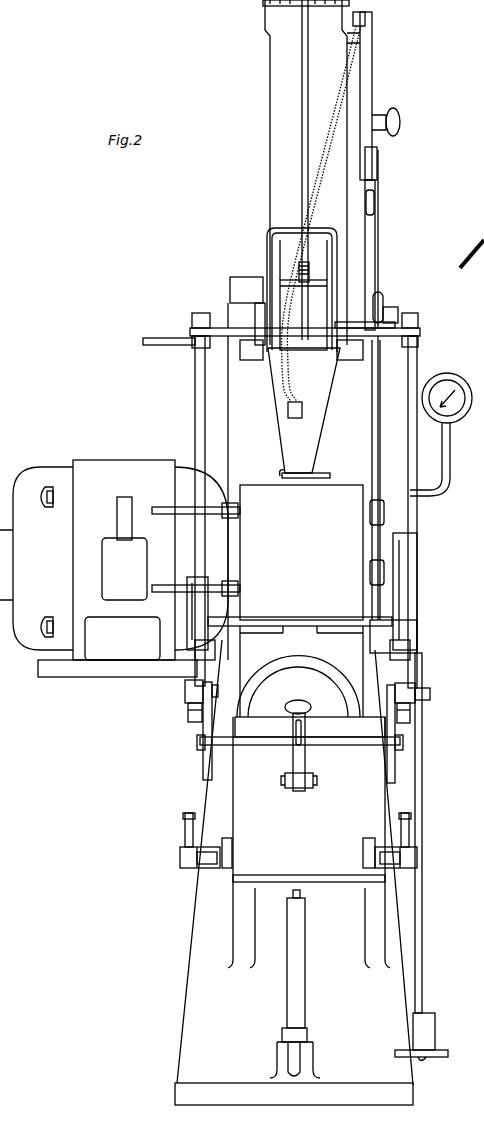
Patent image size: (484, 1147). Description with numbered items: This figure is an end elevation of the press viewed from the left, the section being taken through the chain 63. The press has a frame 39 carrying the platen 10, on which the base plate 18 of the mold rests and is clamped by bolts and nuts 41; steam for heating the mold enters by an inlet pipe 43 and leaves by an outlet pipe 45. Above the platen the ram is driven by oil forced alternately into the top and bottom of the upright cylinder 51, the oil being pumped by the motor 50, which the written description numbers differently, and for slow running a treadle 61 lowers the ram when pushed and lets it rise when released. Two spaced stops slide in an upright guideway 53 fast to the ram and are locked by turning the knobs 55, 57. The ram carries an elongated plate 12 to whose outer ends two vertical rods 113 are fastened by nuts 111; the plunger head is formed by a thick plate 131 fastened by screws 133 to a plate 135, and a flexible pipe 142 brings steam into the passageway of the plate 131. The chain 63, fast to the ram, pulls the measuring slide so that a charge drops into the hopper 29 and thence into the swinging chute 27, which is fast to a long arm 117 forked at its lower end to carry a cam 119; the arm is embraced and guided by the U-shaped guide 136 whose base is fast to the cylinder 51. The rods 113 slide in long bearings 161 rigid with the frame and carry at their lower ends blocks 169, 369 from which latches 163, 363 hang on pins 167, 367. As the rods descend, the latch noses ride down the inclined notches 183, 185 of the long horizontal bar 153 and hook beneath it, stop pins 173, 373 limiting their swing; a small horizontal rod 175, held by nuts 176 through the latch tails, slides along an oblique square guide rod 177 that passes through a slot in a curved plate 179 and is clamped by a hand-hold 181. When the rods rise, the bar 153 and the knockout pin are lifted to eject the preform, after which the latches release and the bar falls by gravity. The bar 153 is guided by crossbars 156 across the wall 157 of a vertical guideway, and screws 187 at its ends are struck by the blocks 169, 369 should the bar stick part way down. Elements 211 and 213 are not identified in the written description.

The platen 10 is at (400, 645).
The plate 12 is at (222, 326).
The base plate 18 is at (300, 628).
The swinging chute 27 is at (320, 397).
The hopper 29 is at (318, 296).
The frame 39 is at (200, 982).
The bolts and nuts 41 is at (210, 580).
The inlet pipe 43 is at (166, 506).
The outlet pipe 45 is at (166, 586).
The motor 50 is at (62, 478).
The upright cylinder 51 is at (268, 70).
The upright guideway 53 is at (372, 78).
The knob 55 is at (400, 122).
The knob 57 is at (390, 312).
The treadle 61 is at (430, 1060).
The chain 63 is at (298, 264).
The nuts 111 is at (192, 320).
The vertical rods 113 is at (195, 386).
The long arm 117 is at (305, 35).
The cam 119 is at (316, 245).
The thick plate 131 is at (345, 360).
The screws 133 is at (255, 360).
The plate 135 is at (365, 345).
The U-shaped guide member 136 is at (265, 290).
The flexible pipe 142 is at (150, 340).
The long horizontal bar 153 is at (180, 858).
The crossbars 156 is at (228, 868).
The wall 157 is at (360, 810).
The long bearings 161 is at (196, 617).
The latch 163 is at (203, 728).
The pin 167 is at (218, 690).
The small block 169 is at (190, 692).
The stop pin 173 is at (188, 712).
The horizontal rod 175 is at (267, 745).
The nuts 176 is at (197, 742).
The guide rod 177 is at (306, 770).
The curved plate 179 is at (460, 264).
The hand-hold 181 is at (463, 260).
The notch 183 is at (205, 862).
The notch 185 is at (395, 868).
The screws 187 is at (185, 828).
The hose 211 is at (362, 38).
The hook 213 is at (305, 470).
The latch 363 is at (395, 728).
The pin 367 is at (372, 680).
The block 369 is at (430, 692).
The stop pin 373 is at (410, 712).